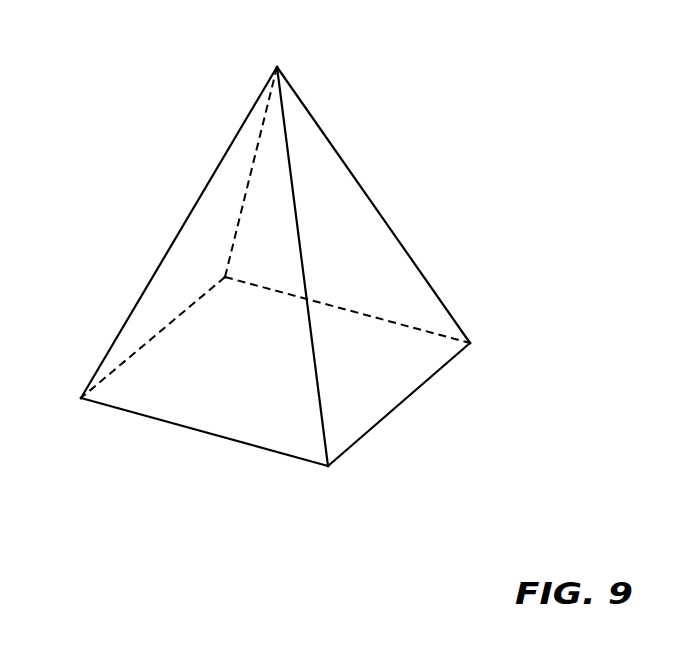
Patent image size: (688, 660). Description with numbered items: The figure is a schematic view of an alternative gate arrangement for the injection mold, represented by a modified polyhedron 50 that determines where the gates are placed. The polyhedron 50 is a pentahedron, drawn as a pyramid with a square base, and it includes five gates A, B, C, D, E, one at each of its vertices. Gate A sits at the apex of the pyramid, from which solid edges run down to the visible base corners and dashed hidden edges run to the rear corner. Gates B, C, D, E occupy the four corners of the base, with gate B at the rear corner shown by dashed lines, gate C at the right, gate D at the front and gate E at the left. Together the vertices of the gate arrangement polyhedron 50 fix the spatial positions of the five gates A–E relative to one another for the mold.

The modified polyhedron 50 is at (474, 134).
The gate A is at (277, 66).
The gate B is at (224, 276).
The gate C is at (471, 344).
The gate D is at (329, 467).
The gate E is at (80, 398).